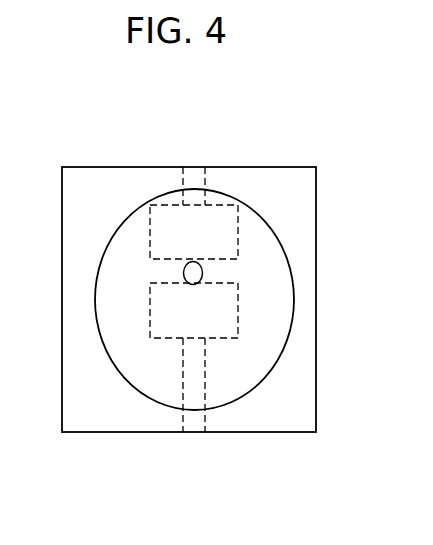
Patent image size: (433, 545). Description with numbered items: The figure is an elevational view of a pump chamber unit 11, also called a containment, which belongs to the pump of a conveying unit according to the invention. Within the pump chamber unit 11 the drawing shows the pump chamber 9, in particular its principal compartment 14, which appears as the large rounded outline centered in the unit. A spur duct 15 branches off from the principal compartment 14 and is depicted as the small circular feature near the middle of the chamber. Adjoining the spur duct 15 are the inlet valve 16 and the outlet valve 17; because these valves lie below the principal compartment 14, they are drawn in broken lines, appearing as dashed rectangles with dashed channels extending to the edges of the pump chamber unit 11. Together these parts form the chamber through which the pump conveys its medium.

The pump chamber unit 11 is at (70, 129).
The pump chamber 9 is at (264, 220).
The principal compartment 14 is at (252, 355).
The spur duct 15 is at (183, 270).
The inlet valve 16 is at (215, 340).
The outlet valve 17 is at (222, 205).